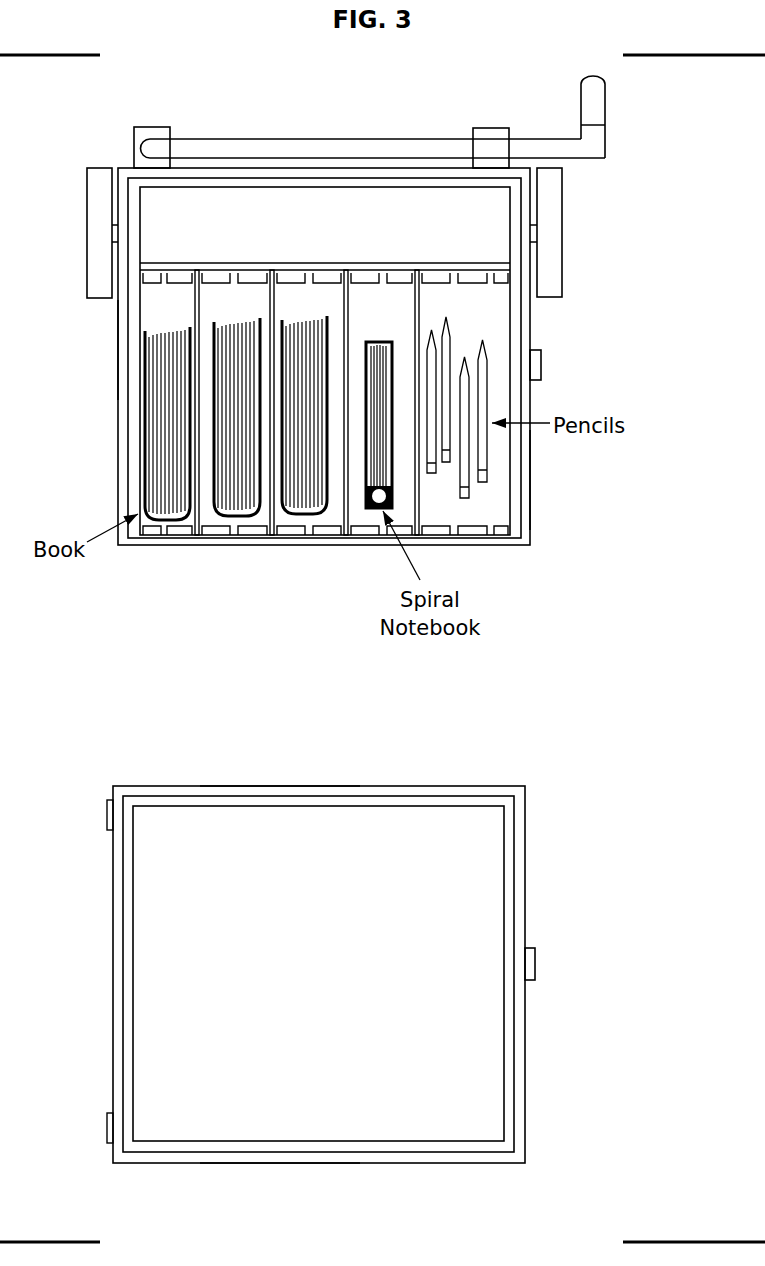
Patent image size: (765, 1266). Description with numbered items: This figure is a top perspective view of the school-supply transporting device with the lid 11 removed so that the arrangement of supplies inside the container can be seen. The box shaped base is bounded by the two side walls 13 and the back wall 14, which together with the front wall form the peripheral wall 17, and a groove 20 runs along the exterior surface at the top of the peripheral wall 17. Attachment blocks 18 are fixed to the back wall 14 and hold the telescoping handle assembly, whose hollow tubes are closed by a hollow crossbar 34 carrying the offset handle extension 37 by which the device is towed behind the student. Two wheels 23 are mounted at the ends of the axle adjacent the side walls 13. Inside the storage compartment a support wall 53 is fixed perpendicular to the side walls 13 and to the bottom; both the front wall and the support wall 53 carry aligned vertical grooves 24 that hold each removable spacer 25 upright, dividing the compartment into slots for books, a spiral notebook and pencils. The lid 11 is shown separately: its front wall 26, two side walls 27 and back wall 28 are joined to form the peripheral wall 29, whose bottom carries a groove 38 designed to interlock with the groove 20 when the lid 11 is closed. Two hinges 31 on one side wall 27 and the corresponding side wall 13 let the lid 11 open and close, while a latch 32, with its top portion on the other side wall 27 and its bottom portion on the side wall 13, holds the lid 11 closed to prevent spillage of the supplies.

The lid 11 is at (549, 1096).
The side walls 13 is at (535, 486).
The back wall 14 is at (225, 167).
The peripheral wall 17 is at (120, 163).
The attachment blocks 18 is at (490, 127).
The groove 20 is at (117, 340).
The wheels 23 is at (564, 203).
The vertical grooves 24 is at (491, 537).
The removable spacer 25 is at (199, 537).
The front wall 26 is at (280, 785).
The side walls 27 is at (503, 1062).
The back wall 28 is at (290, 1165).
The peripheral wall 29 is at (538, 790).
The hinges 31 is at (100, 846).
The latch 32 is at (543, 367).
The hollow crossbar 34 is at (347, 138).
The offset handle extension 37 is at (607, 140).
The groove 38 is at (352, 808).
The support wall 53 is at (372, 263).